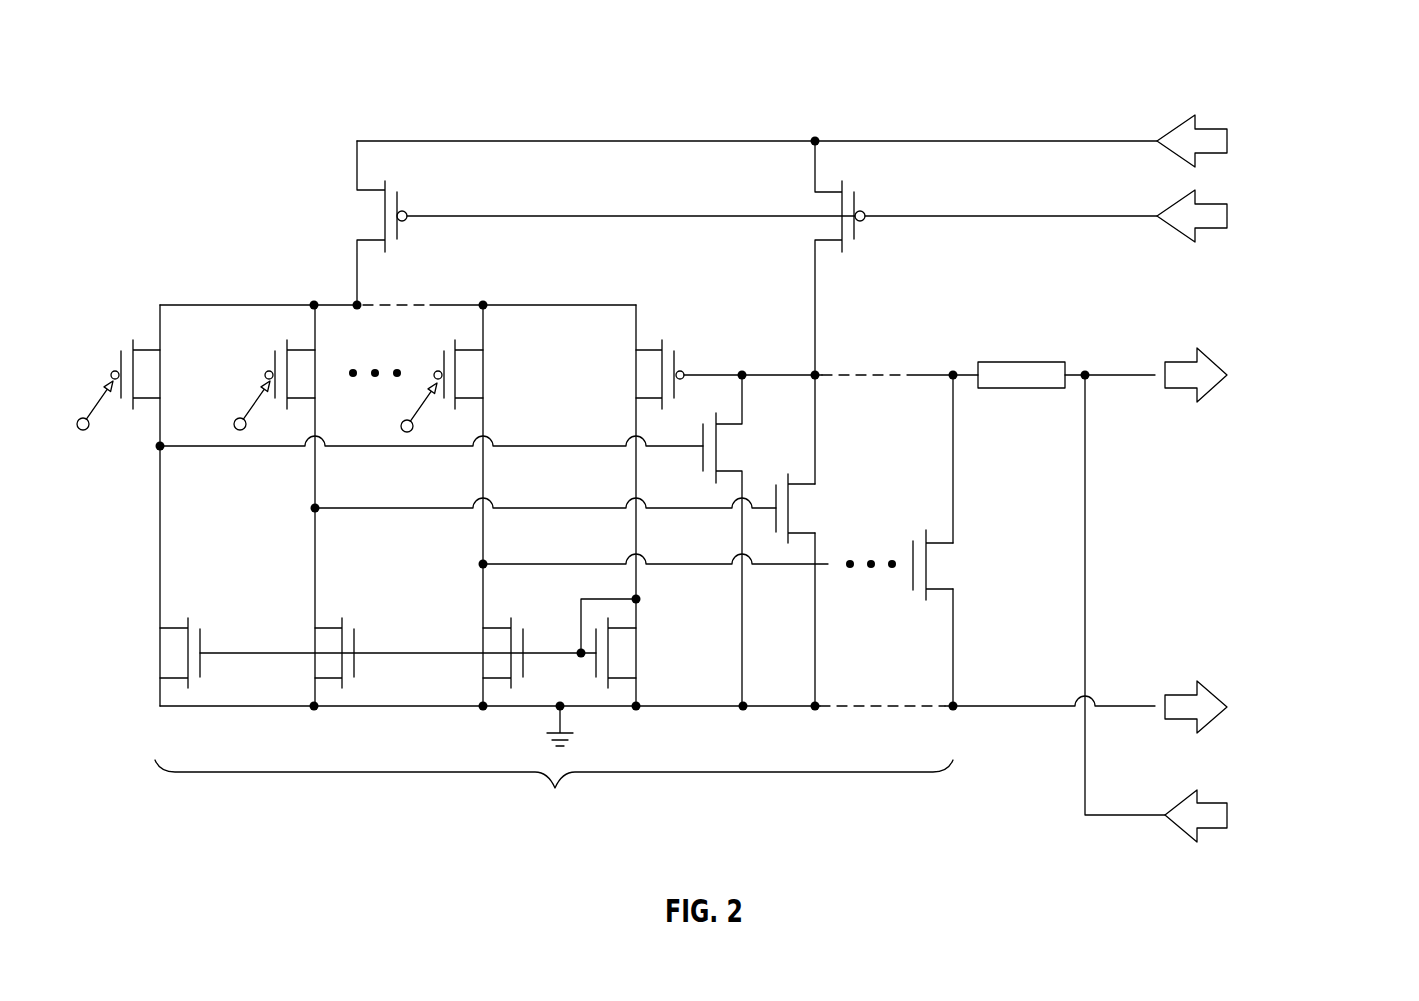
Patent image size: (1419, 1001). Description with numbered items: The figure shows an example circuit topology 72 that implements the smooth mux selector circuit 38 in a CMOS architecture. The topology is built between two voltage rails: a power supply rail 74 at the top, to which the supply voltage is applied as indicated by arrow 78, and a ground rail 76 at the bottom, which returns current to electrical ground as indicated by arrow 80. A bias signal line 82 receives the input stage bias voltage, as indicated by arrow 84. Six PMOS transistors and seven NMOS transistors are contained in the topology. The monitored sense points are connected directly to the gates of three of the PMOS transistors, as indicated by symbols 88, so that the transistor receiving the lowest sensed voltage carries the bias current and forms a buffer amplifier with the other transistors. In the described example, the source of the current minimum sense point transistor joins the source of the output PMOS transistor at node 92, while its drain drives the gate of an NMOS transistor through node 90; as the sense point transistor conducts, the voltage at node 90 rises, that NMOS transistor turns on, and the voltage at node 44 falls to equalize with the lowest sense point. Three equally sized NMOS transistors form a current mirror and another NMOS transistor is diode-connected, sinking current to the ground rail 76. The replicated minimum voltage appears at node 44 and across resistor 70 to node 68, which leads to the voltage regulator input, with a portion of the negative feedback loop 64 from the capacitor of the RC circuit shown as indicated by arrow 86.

The circuit topology 72 is at (277, 108).
The power supply rail 74 is at (960, 141).
The arrow 78 is at (1208, 130).
The bias signal line 82 is at (1003, 216).
The arrow 84 is at (1207, 229).
The node 92 is at (486, 303).
The symbols 88 is at (103, 397).
The node 44 is at (953, 372).
The resistor 70 is at (1018, 382).
The node 68 is at (1086, 372).
The node 90 is at (486, 562).
The ground rail 76 is at (260, 708).
The arrow 80 is at (1180, 719).
The negative feedback loop 64 is at (1085, 768).
The arrow 86 is at (1203, 829).
The smooth mux selector circuit 38 is at (554, 792).